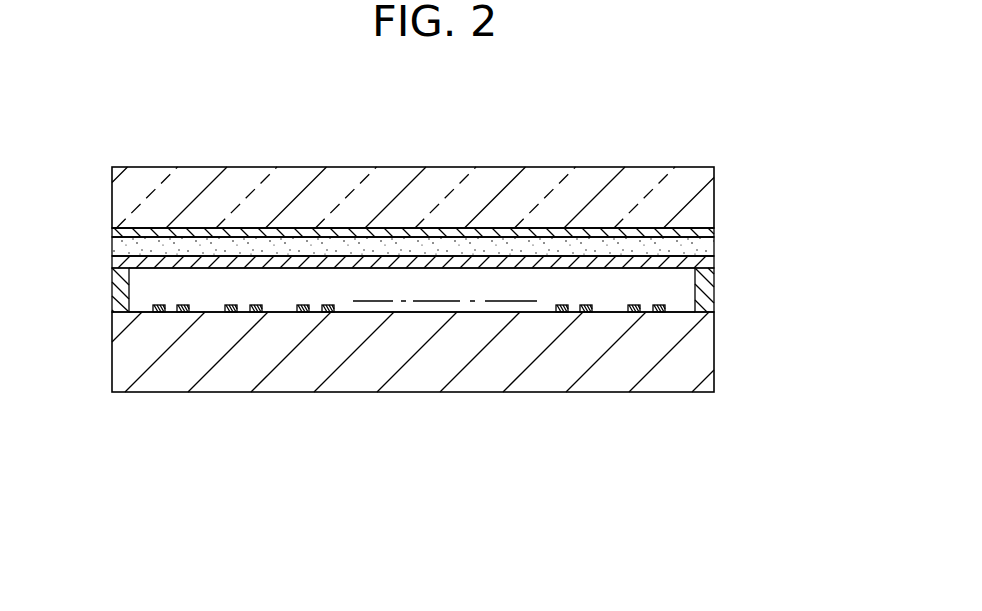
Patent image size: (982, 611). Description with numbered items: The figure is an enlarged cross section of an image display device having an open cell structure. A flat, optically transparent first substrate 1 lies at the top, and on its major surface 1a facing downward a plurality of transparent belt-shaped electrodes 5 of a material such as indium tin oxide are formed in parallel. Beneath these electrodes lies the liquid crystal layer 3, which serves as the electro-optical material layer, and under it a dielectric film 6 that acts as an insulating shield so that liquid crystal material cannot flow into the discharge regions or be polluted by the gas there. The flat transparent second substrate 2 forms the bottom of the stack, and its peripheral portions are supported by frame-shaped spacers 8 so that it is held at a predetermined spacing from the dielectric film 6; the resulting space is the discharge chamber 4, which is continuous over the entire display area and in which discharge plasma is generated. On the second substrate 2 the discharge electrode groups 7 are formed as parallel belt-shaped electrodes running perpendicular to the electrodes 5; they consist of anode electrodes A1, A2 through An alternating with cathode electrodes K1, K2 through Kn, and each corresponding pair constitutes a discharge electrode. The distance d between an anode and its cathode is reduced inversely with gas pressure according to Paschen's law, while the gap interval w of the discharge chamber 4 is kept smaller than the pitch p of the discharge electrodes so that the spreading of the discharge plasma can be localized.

The first substrate 1 is at (553, 196).
The major surface 1a is at (276, 236).
The second substrate 2 is at (705, 377).
The liquid crystal layer 3 is at (714, 250).
The discharge chamber 4 is at (681, 293).
The belt-shaped electrodes 5 is at (112, 232).
The dielectric film 6 is at (117, 262).
The discharge electrode groups 7 is at (152, 302).
The frame-shaped spacers 8 is at (117, 288).
The anode electrode A1 is at (156, 312).
The cathode electrode K1 is at (181, 312).
The anode electrode A2 is at (230, 312).
The cathode electrode K2 is at (257, 312).
The anode electrode An is at (632, 312).
The cathode electrode Kn is at (658, 312).
The distance between discharge electrodes d is at (164, 312).
The pitch of the discharge electrodes p is at (226, 312).
The gap interval of the discharge chamber w is at (714, 268).